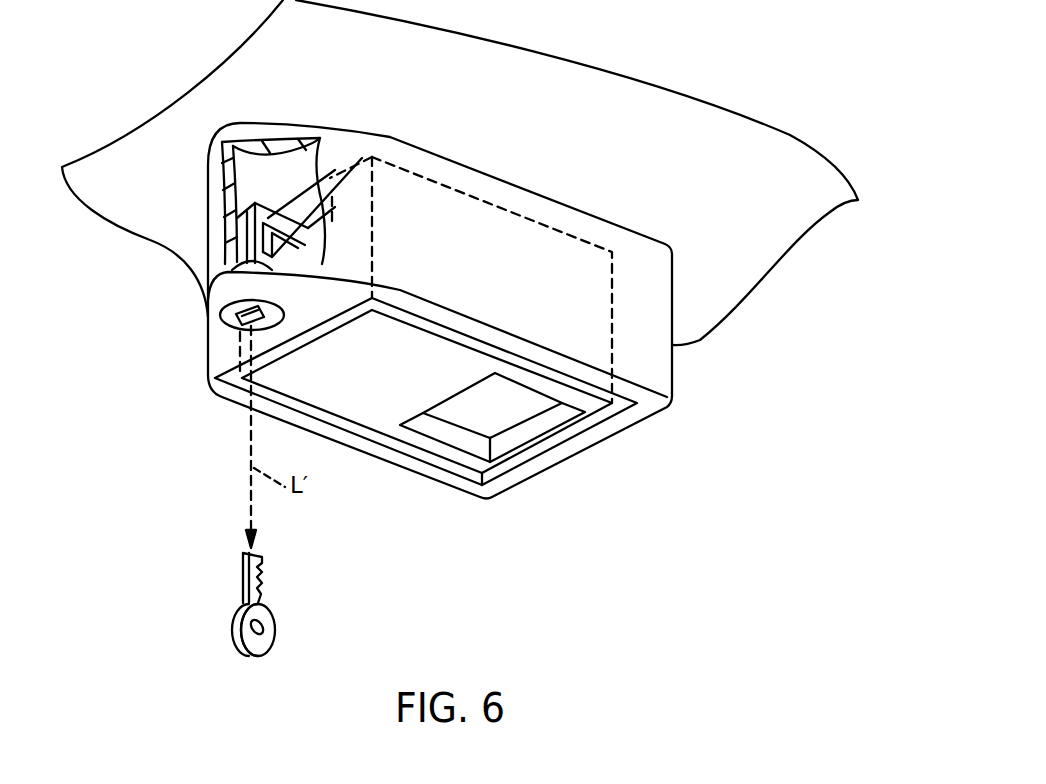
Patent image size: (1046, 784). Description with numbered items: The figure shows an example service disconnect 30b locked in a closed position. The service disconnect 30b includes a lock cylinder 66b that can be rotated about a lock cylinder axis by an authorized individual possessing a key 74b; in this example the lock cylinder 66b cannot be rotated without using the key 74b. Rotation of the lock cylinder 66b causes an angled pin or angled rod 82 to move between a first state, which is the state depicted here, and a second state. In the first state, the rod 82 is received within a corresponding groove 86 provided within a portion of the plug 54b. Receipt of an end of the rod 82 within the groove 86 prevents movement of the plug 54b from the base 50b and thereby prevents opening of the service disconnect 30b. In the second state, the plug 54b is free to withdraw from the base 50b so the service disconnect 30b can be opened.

The service disconnect 30b is at (577, 208).
The base 50b is at (657, 367).
The plug 54b is at (338, 403).
The lock cylinder 66b is at (230, 318).
The key 74b is at (276, 628).
The angled rod 82 is at (266, 216).
The groove 86 is at (308, 222).